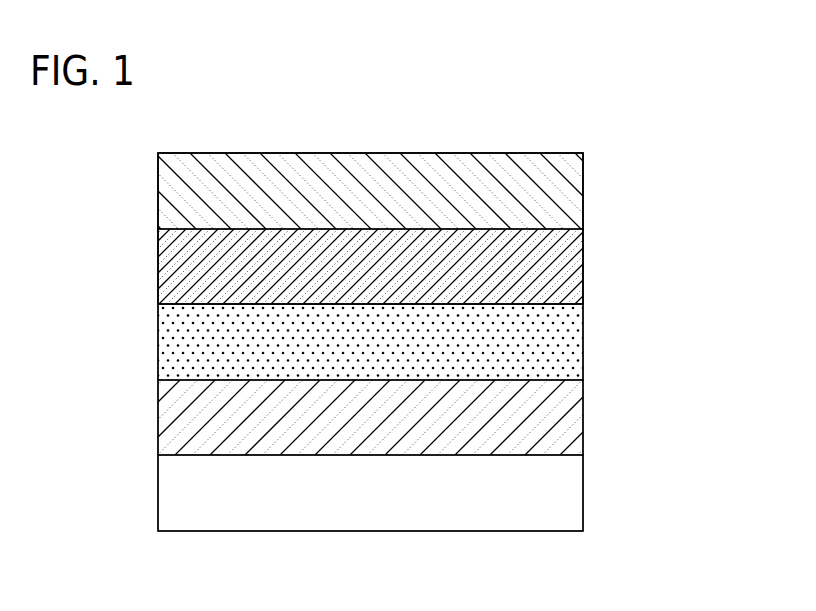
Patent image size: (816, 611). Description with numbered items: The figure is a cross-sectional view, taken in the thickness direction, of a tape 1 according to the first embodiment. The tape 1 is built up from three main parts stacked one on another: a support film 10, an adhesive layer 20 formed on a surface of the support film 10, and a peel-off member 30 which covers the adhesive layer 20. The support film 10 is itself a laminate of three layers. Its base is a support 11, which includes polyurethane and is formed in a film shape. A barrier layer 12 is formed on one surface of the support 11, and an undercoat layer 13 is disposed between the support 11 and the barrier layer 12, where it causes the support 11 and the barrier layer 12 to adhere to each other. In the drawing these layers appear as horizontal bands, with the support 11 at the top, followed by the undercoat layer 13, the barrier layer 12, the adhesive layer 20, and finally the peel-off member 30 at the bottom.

The tape 1 is at (675, 125).
The support film 10 is at (657, 220).
The support 11 is at (567, 188).
The undercoat layer 13 is at (567, 265).
The barrier layer 12 is at (567, 342).
The adhesive layer 20 is at (567, 415).
The peel-off member 30 is at (567, 492).